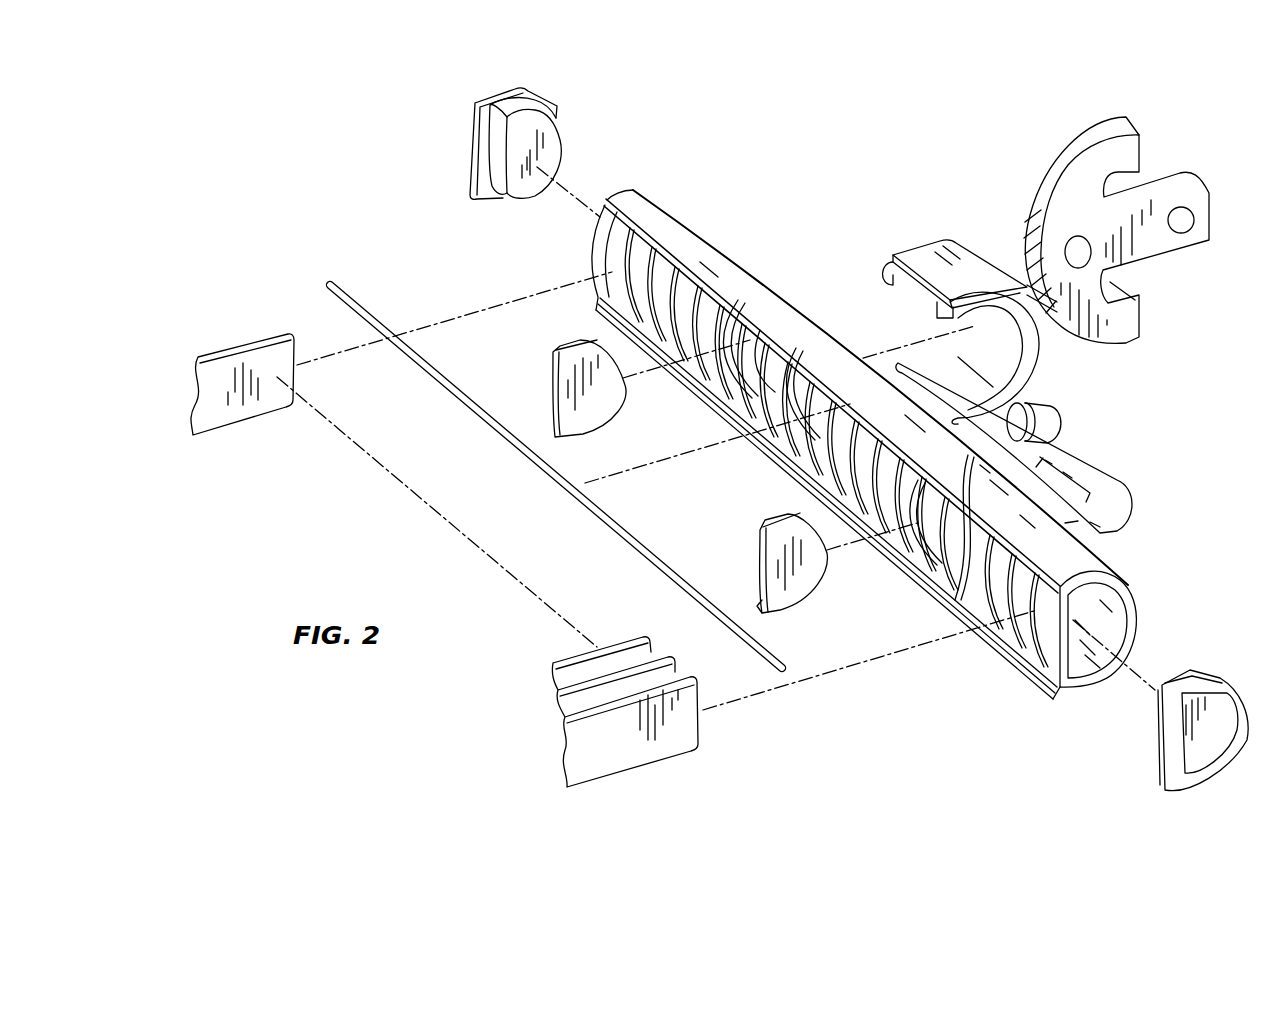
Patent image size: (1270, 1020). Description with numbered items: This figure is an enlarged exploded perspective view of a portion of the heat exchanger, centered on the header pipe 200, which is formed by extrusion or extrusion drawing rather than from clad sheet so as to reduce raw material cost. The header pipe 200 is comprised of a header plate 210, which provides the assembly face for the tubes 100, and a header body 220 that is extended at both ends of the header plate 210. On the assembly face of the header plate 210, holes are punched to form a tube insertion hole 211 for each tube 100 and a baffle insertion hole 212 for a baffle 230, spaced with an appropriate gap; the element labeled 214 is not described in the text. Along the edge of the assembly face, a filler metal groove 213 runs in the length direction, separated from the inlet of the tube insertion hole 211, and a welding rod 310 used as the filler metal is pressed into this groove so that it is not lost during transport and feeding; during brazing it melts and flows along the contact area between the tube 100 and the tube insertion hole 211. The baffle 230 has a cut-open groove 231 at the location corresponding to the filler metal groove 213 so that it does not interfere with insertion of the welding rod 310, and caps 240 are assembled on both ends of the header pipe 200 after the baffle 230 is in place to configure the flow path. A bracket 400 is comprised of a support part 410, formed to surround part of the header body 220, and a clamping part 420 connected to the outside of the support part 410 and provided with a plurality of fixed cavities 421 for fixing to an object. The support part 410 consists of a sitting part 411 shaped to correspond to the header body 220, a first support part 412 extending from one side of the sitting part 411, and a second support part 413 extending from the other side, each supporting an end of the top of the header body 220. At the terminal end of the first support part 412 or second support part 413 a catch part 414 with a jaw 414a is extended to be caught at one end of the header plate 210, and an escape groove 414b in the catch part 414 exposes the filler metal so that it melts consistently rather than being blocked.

The tube 100 is at (267, 350).
The header pipe 200 is at (857, 414).
The header plate 210 is at (1047, 647).
The tube insertion hole 211 is at (767, 357).
The baffle insertion hole 212 is at (710, 312).
The filler metal groove 213 is at (570, 272).
The rib 214 is at (680, 270).
The header body 220 is at (1133, 597).
The baffle 230 is at (777, 597).
The cut-open groove 231 is at (760, 607).
The cap 240 is at (473, 147).
The welding rod 310 is at (366, 311).
The bracket 400 is at (1022, 329).
The support part 410 is at (980, 385).
The sitting part 411 is at (1040, 353).
The first support part 412 is at (957, 300).
The second support part 413 is at (1020, 443).
The catch part 414 is at (888, 258).
The jaw 414a is at (884, 270).
The escape groove 414b is at (913, 292).
The clamping part 420 is at (1120, 219).
The fixed cavity 421 is at (1180, 224).